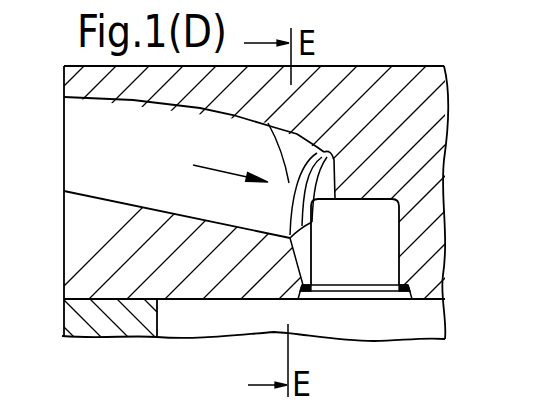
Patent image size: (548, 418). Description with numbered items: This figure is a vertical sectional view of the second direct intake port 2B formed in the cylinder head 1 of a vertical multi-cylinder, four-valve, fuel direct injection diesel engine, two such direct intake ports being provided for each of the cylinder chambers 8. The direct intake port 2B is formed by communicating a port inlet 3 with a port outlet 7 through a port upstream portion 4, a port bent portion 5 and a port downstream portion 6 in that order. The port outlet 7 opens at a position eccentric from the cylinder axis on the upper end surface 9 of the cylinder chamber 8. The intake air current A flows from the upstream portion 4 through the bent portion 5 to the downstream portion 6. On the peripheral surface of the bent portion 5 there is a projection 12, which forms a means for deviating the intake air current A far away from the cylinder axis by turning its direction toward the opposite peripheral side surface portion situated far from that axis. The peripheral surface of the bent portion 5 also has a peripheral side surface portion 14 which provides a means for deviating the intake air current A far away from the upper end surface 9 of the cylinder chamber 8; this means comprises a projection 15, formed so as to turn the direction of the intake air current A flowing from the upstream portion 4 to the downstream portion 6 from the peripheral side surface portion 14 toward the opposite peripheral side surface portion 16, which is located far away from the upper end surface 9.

The cylinder head 1 is at (274, 203).
The second direct intake port 2B is at (198, 174).
The port inlet 3 is at (63, 115).
The port upstream portion 4 is at (128, 168).
The port bent portion 5 is at (268, 123).
The port downstream portion 6 is at (369, 242).
The port outlet 7 is at (369, 306).
The cylinder chamber 8 is at (185, 324).
The upper end surface 9 is at (223, 302).
The projection 12 is at (341, 159).
The peripheral side surface portion 14 is at (263, 246).
The projection 15 is at (298, 250).
The opposite peripheral side surface portion 16 is at (337, 97).
The intake air current A is at (228, 176).